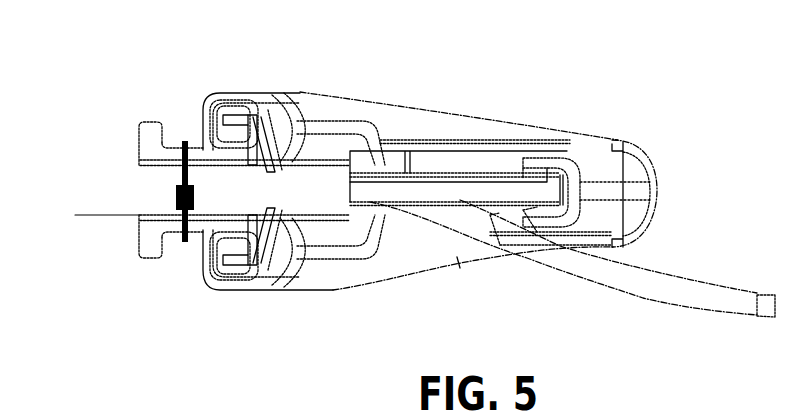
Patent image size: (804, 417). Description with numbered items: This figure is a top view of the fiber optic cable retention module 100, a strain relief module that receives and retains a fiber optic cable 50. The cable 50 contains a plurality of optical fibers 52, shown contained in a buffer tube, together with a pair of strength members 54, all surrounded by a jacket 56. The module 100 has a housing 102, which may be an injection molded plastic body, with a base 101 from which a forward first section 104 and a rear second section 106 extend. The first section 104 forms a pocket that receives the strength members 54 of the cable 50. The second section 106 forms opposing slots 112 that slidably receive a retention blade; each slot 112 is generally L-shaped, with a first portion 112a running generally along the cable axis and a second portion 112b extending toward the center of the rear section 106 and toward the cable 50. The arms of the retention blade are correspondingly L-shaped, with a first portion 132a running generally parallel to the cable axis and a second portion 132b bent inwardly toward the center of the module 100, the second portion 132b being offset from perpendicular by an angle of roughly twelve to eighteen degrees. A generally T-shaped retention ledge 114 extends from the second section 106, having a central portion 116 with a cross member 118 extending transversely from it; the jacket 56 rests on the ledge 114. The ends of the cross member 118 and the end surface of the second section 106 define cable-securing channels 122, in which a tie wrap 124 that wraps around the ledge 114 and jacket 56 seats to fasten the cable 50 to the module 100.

The fiber optic cable 50 is at (104, 159).
The jacket 56 is at (117, 202).
The cross member 118 is at (144, 136).
The cable-securing channels 122 is at (175, 127).
The retention ledge 114 is at (140, 247).
The central portion 116 is at (173, 223).
The tie wrap 124 is at (185, 242).
The fiber optic cable retention module 100 is at (485, 163).
The second section 106 is at (285, 103).
The first section 104 is at (647, 160).
The housing 102 is at (638, 233).
The strength members 54 is at (503, 183).
The first portion 132a is at (247, 117).
The second portion 132b is at (272, 163).
The slots 112 is at (253, 120).
The first portion 112a is at (240, 127).
The second portion 112b is at (277, 130).
The optical fibers 52 is at (673, 305).
The base 101 is at (460, 257).